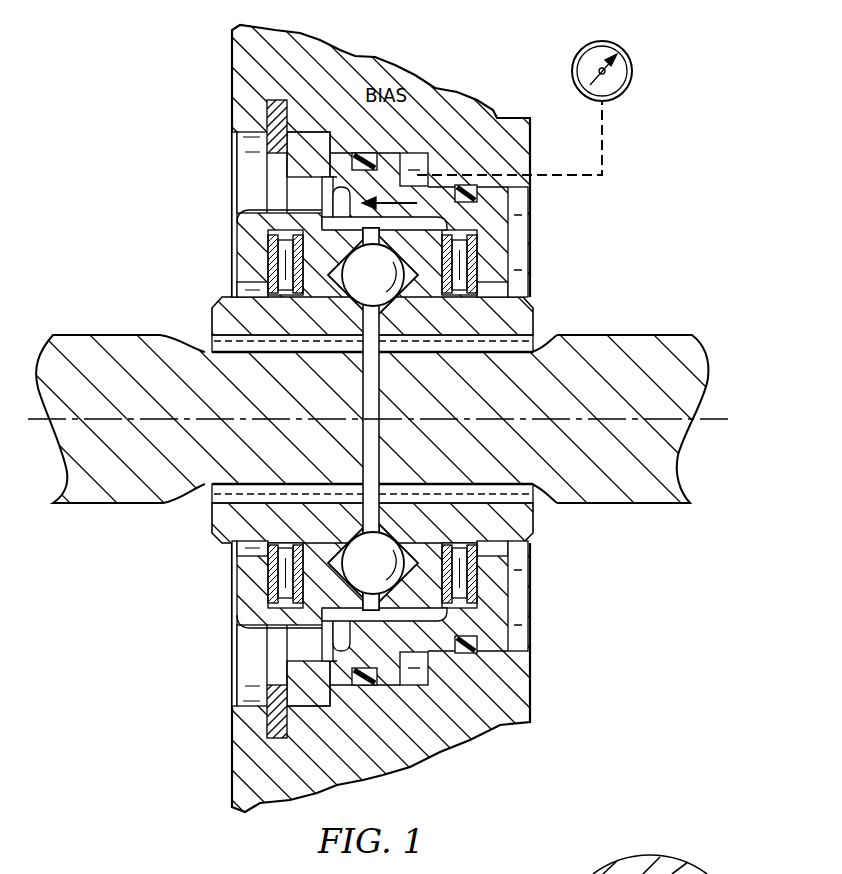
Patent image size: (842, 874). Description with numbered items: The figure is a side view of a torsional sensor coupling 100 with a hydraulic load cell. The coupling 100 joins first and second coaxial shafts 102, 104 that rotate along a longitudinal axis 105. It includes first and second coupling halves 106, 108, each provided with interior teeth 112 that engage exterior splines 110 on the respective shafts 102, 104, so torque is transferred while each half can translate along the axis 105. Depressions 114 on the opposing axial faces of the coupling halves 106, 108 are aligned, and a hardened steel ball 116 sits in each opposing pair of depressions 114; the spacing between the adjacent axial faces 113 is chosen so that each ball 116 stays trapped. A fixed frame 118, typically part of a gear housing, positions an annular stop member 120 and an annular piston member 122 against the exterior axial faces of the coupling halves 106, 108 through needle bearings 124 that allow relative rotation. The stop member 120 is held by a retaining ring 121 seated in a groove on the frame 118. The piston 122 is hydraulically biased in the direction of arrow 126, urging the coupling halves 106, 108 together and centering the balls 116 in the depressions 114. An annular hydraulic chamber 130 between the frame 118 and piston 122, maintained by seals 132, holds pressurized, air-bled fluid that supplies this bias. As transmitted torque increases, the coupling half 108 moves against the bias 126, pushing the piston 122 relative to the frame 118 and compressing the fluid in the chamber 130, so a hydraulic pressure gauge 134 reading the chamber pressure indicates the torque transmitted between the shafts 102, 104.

The torsional sensor coupling 100 is at (662, 250).
The first coaxial shaft 102 is at (73, 333).
The second coaxial shaft 104 is at (637, 333).
The longitudinal axis 105 is at (713, 421).
The first coupling half 106 is at (212, 315).
The second coupling half 108 is at (535, 545).
The exterior splines 110 is at (205, 506).
The interior teeth 112 is at (270, 493).
The adjacent axial faces 113 is at (362, 312).
The depressions 114 is at (347, 547).
The ball 116 is at (293, 633).
The fixed frame 118 is at (230, 45).
The annular stop member 120 is at (250, 222).
The retaining ring 121 is at (267, 104).
The annular piston member 122 is at (510, 225).
The needle bearings 124 is at (287, 245).
The bias direction arrow 126 is at (378, 205).
The annular hydraulic chamber 130 is at (416, 165).
The seals 132 is at (362, 686).
The hydraulic pressure gauge 134 is at (636, 70).